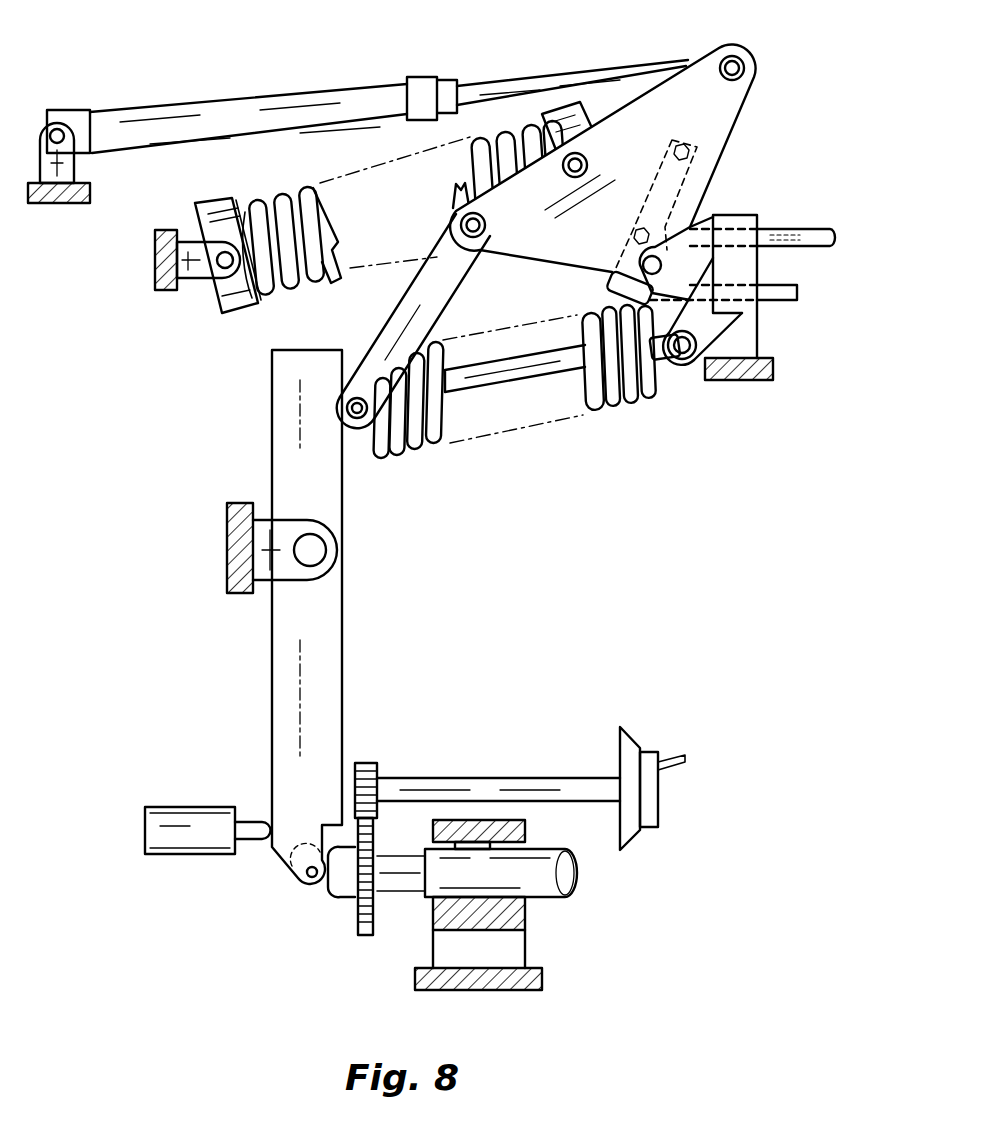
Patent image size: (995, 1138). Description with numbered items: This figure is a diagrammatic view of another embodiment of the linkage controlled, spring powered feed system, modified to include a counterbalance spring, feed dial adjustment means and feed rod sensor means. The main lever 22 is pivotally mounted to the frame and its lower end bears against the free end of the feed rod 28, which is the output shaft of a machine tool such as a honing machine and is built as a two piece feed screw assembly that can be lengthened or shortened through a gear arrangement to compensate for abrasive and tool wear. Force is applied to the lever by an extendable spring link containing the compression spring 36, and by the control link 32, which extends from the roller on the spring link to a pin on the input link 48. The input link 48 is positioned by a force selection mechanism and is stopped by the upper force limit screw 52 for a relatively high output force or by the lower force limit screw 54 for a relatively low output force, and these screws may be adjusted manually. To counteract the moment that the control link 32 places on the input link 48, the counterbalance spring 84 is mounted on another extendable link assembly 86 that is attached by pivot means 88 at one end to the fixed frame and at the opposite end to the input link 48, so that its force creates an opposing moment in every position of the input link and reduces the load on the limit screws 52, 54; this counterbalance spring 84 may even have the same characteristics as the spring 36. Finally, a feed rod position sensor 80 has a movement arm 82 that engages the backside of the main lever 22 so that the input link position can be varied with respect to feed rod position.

The main lever 22 is at (268, 672).
The feed rod 28 is at (572, 890).
The control link 32 is at (440, 282).
The compression spring 36 is at (622, 415).
The input link 48 is at (735, 130).
The upper force limit screw 52 is at (828, 248).
The lower force limit screw 54 is at (785, 300).
The feed rod position sensor 80 is at (182, 856).
The movement arm 82 is at (250, 820).
The counterbalance spring 84 is at (290, 290).
The extendable link assembly 86 is at (197, 207).
The pivot means 88 is at (220, 270).